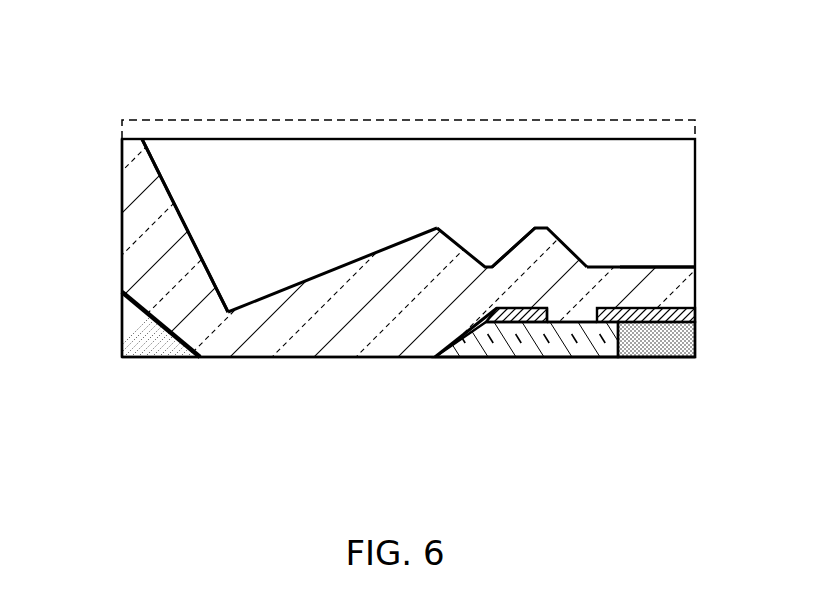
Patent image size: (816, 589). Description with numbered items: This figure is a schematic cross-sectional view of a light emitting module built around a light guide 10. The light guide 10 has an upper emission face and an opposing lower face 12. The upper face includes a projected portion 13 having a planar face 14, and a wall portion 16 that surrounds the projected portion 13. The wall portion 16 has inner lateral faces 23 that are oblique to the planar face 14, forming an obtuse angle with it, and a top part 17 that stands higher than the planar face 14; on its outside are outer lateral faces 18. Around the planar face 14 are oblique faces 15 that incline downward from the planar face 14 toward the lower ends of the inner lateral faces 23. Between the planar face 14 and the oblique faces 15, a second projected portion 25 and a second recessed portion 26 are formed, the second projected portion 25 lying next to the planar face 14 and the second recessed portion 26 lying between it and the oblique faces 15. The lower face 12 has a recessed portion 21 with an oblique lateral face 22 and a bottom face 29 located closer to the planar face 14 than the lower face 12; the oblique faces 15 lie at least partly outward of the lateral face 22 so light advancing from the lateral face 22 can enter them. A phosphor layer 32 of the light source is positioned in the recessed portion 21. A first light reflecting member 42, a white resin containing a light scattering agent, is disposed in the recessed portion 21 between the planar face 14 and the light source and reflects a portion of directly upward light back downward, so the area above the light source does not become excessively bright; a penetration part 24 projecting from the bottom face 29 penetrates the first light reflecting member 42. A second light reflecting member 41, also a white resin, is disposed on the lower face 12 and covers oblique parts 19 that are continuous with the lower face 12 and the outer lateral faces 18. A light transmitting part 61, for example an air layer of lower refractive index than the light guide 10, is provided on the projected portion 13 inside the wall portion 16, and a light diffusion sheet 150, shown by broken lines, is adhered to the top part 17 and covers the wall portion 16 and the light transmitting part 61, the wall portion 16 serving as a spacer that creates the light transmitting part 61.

The light guide 10 is at (308, 362).
The lower face 12 is at (383, 358).
The projected portion 13 is at (657, 260).
The planar face 14 is at (622, 267).
The oblique faces 15 is at (307, 275).
The wall portion 16 is at (145, 231).
The top part 17 is at (133, 137).
The outer lateral faces 18 is at (122, 180).
The oblique parts 19 is at (168, 320).
The recessed portion 21 is at (542, 352).
The lateral face 22 is at (458, 345).
The inner lateral faces 23 is at (178, 180).
The penetration part 24 is at (575, 310).
The second projected portion 25 is at (538, 240).
The second recessed portion 26 is at (485, 255).
The bottom face 29 is at (523, 322).
The phosphor layer 32 is at (653, 337).
The second light reflecting member 41 is at (137, 330).
The first light reflecting member 42 is at (670, 317).
The light transmitting part 61 is at (366, 170).
The light diffusion sheet 150 is at (232, 120).